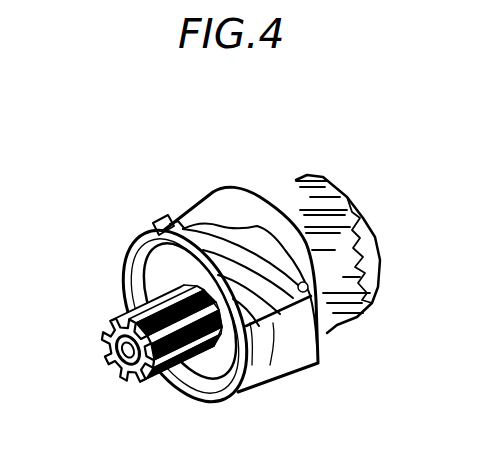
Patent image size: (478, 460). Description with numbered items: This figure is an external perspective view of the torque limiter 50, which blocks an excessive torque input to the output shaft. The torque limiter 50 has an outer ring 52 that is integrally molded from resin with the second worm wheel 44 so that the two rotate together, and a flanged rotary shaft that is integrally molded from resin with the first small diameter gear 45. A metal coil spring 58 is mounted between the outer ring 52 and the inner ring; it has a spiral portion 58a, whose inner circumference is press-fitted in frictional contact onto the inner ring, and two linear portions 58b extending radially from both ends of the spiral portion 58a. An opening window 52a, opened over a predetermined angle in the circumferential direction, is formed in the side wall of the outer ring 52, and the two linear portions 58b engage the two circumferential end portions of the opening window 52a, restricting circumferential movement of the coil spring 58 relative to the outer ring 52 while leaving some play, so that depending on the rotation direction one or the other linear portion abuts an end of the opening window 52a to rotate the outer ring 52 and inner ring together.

The torque limiter 50 is at (362, 98).
The outer ring 52 is at (208, 179).
The opening window 52a is at (161, 221).
The second worm wheel 44 is at (282, 175).
The first small diameter gear 45 is at (118, 314).
The coil spring 58 is at (228, 311).
The spiral portion 58a is at (268, 304).
The linear portions 58b is at (185, 224).